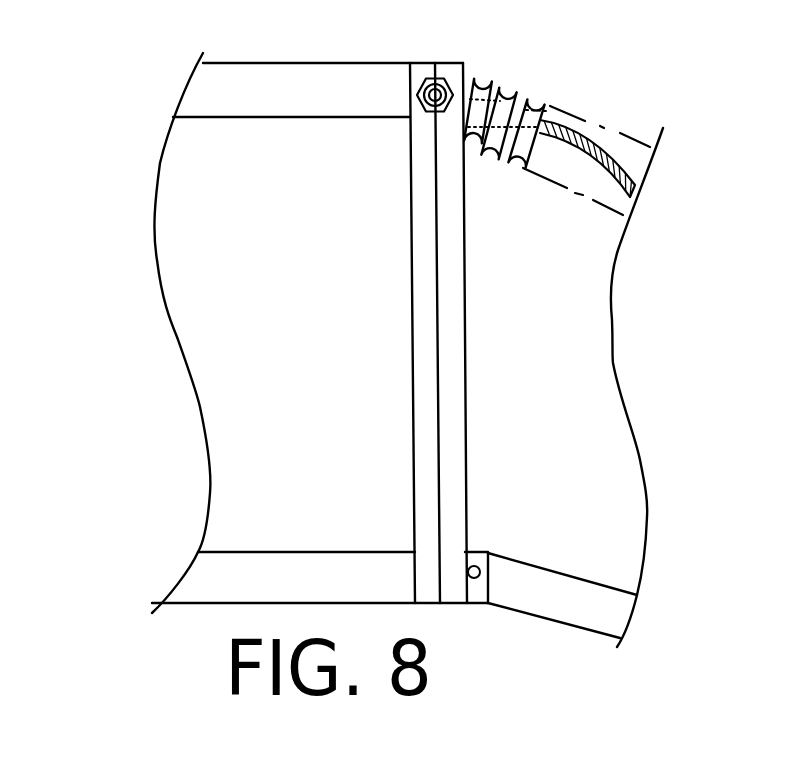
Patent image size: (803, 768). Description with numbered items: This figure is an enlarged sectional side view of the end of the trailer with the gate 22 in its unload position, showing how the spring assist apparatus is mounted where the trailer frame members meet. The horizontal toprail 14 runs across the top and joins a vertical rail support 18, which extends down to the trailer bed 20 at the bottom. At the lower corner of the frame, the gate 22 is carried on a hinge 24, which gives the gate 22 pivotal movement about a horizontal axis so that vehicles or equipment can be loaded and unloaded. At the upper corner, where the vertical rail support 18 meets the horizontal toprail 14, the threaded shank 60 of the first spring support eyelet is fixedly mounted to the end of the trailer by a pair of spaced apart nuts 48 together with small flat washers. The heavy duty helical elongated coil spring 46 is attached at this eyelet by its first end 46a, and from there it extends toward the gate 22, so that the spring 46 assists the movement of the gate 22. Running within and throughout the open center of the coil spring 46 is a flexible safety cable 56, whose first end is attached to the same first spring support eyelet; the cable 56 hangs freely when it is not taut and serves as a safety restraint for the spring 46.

The horizontal toprail 14 is at (215, 92).
The vertical rail support 18 is at (428, 300).
The trailer bed 20 is at (310, 562).
The gate 22 is at (530, 582).
The hinge 24 is at (485, 552).
The helical elongated coil spring 46 is at (518, 85).
The first end of coil spring 46a is at (468, 75).
The nut 48 is at (419, 106).
The flexible safety cable 56 is at (583, 120).
The threaded shank 60 is at (435, 96).